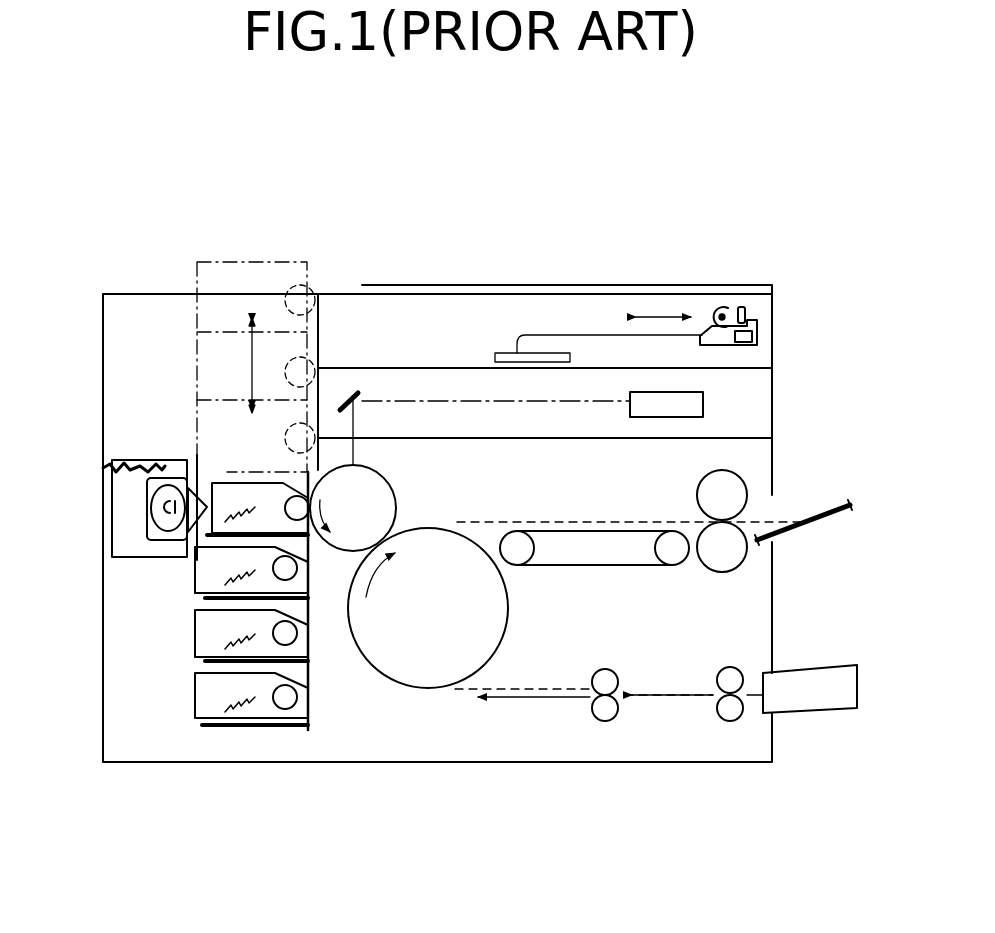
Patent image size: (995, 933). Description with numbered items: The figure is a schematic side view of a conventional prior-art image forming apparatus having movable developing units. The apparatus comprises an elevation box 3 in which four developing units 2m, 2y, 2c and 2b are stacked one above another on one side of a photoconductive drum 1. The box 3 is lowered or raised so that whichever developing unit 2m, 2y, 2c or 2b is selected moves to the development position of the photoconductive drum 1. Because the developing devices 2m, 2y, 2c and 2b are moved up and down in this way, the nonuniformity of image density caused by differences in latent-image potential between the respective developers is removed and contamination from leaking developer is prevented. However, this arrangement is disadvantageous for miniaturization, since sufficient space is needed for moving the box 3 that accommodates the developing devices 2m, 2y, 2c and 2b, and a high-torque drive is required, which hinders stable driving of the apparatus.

The photoconductive drum 1 is at (398, 483).
The developing unit 2m is at (229, 477).
The developing unit 2y is at (189, 576).
The developing unit 2c is at (191, 637).
The developing unit 2b is at (192, 698).
The elevation box 3 is at (316, 702).